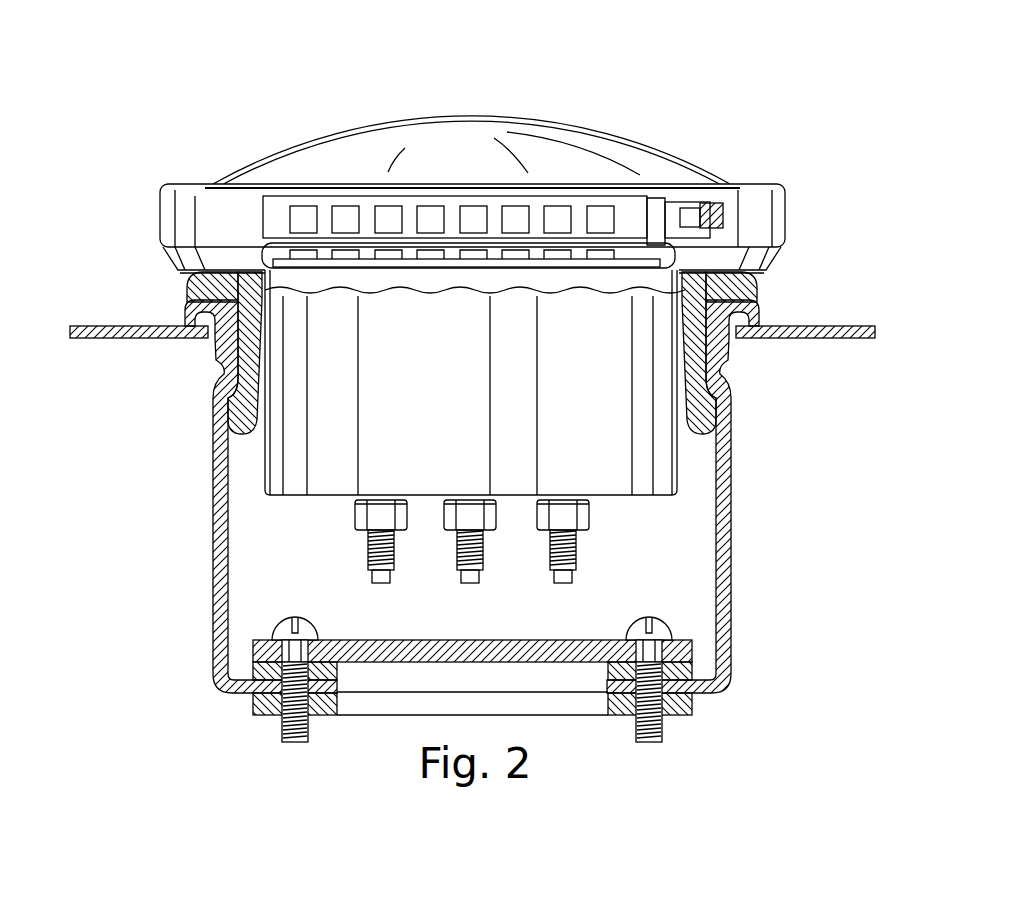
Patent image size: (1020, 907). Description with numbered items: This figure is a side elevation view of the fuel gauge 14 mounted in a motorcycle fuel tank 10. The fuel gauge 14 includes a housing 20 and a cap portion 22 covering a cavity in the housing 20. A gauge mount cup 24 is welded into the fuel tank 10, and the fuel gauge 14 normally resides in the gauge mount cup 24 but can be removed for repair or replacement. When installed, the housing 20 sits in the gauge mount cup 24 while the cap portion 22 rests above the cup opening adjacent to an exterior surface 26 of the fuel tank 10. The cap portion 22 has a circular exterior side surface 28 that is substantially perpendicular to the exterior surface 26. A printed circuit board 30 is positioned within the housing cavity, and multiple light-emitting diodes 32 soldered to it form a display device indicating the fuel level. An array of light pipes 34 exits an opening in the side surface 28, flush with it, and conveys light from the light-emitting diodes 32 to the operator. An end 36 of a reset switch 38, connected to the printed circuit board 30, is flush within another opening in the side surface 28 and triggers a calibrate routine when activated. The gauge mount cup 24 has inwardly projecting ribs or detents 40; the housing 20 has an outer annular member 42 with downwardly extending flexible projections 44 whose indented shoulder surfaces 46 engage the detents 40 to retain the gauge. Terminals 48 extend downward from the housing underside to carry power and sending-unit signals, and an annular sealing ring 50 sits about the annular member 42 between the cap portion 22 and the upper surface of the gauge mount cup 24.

The fuel tank 10 is at (123, 342).
The fuel gauge 14 is at (416, 52).
The housing 20 is at (313, 500).
The cap portion 22 is at (568, 124).
The gauge mount cup 24 is at (735, 510).
The exterior surface 26 is at (825, 323).
The circular exterior side surface 28 is at (748, 218).
The printed circuit board 30 is at (262, 257).
The light-emitting diodes 32 is at (265, 243).
The array of light pipes 34 is at (260, 217).
The end of reset switch 36 is at (723, 212).
The reset switch 38 is at (667, 207).
The inwardly projecting ribs or detents 40 is at (725, 372).
The outer annular member 42 is at (242, 345).
The flexible projections 44 is at (237, 420).
The indented shoulder surfaces 46 is at (221, 393).
The terminals 48 is at (366, 592).
The annular sealing ring 50 is at (193, 287).